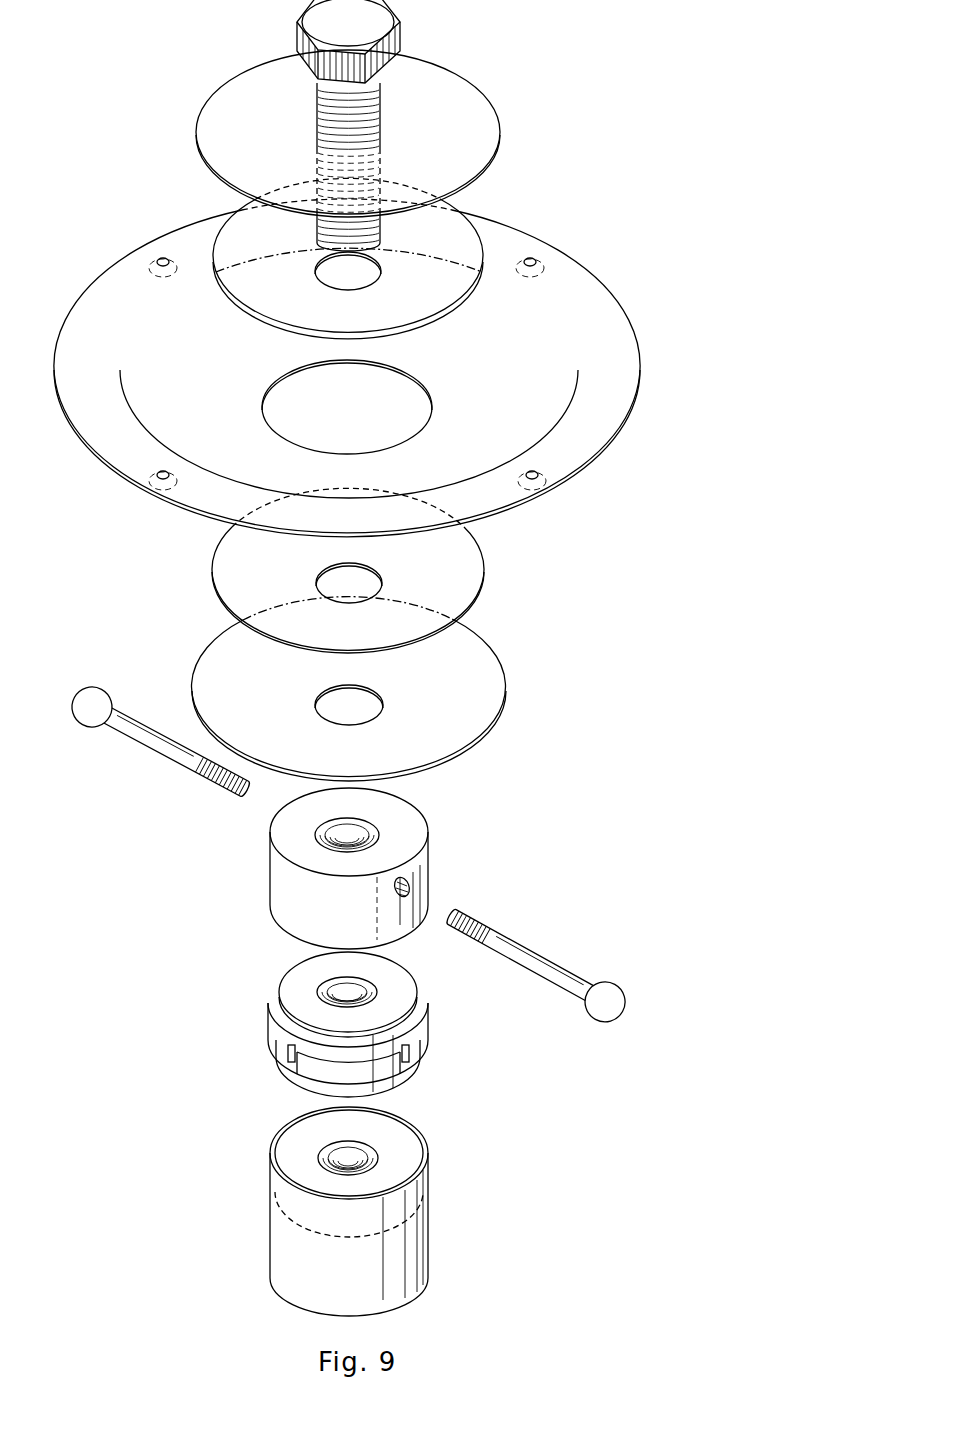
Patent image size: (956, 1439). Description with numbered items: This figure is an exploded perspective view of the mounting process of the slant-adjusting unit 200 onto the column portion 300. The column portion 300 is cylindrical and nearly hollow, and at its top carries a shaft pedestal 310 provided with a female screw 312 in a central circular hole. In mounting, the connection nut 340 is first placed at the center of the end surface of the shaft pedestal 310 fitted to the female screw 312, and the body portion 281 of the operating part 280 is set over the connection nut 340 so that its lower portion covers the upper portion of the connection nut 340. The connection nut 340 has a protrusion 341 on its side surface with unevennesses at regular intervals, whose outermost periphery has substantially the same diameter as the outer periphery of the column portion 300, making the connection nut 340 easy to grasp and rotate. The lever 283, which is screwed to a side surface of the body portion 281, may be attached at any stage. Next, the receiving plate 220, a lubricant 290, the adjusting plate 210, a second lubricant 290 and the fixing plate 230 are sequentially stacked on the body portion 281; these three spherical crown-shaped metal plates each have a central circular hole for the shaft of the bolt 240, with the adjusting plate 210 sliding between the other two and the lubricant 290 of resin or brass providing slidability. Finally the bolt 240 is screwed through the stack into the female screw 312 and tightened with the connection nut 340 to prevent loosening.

The slant-adjusting unit 200 is at (374, 514).
The adjusting plate 210 is at (528, 413).
The receiving plate 220 is at (472, 683).
The fixing plate 230 is at (470, 120).
The bolt 240 is at (368, 20).
The operating part 280 is at (409, 868).
The body portion 281 is at (452, 824).
The lever 283 is at (148, 748).
The lubricant 290 is at (457, 240).
The column portion 300 is at (375, 1134).
The shaft pedestal 310 is at (353, 1206).
The female screw 312 is at (347, 1157).
The connection nut 340 is at (353, 1025).
The protrusion 341 is at (288, 1050).